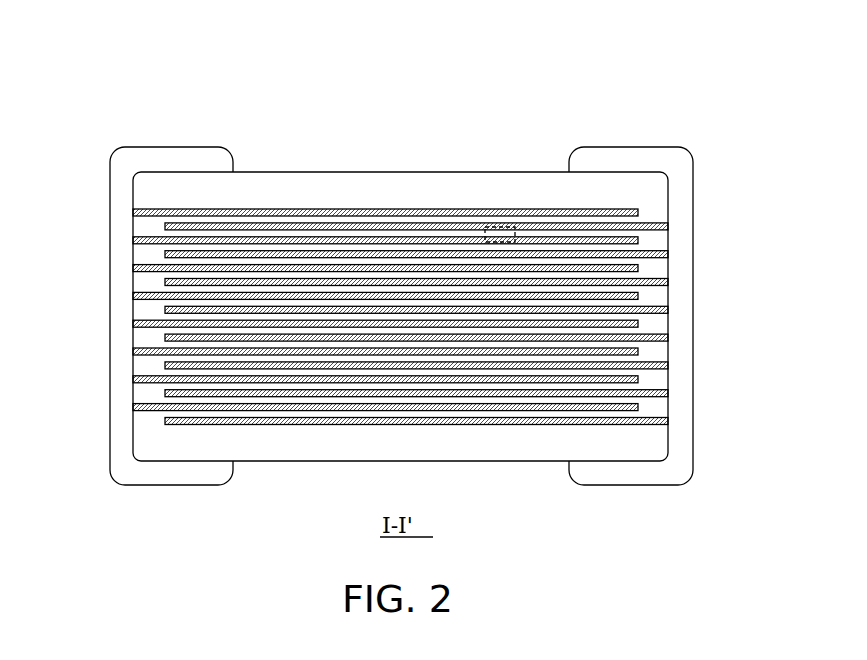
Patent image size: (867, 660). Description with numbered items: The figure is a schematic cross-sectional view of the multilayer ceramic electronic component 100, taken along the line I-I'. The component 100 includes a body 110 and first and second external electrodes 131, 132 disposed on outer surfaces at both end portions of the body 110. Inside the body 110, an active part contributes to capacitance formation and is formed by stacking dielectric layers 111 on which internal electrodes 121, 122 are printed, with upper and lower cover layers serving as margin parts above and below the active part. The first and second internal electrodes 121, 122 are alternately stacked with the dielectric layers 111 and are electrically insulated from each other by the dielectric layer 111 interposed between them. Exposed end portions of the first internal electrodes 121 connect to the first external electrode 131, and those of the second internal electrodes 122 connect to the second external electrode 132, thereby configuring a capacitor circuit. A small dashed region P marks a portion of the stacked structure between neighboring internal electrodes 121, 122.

The multilayer ceramic electronic component 100 is at (412, 48).
The body 110 is at (293, 172).
The dielectric layer 111 is at (634, 222).
The first internal electrode 121 is at (149, 240).
The second internal electrode 122 is at (651, 258).
The first external electrode 131 is at (127, 165).
The second external electrode 132 is at (612, 158).
The enlarged region P is at (500, 227).